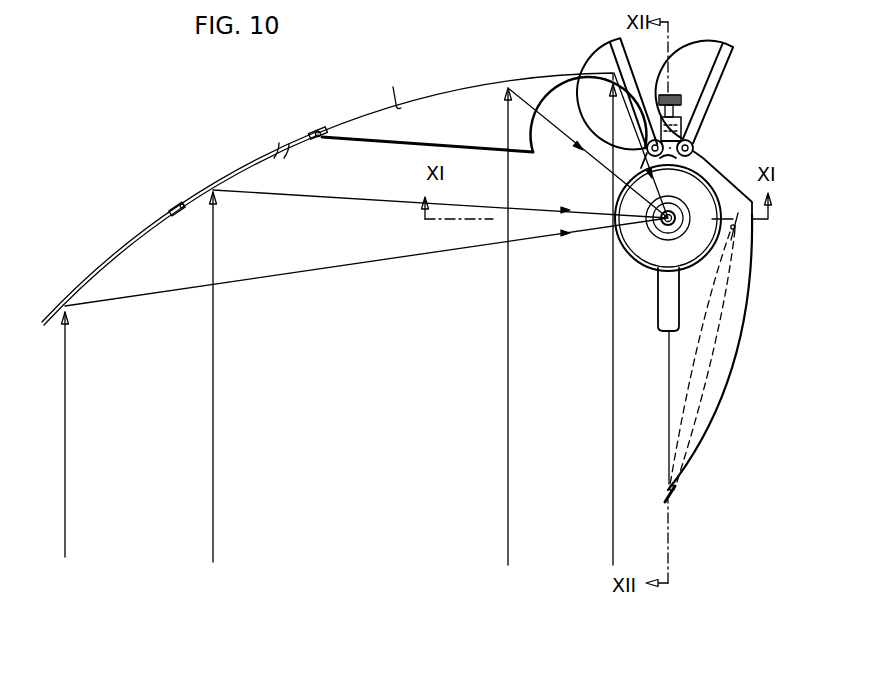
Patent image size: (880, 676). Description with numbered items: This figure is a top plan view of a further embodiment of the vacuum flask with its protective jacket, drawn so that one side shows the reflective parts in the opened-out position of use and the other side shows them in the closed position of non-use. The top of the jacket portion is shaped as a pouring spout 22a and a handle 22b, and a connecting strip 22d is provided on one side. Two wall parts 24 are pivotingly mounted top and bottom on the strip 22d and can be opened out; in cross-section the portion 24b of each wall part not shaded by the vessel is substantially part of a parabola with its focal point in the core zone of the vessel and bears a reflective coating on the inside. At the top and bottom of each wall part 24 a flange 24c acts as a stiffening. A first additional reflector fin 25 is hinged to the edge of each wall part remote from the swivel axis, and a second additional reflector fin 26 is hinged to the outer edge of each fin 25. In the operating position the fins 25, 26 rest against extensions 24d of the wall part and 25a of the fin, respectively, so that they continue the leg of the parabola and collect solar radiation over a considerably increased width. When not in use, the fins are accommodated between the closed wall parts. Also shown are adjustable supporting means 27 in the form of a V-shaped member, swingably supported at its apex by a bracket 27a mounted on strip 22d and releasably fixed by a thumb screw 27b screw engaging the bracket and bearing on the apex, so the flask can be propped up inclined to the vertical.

The pouring spout 22a is at (702, 182).
The handle 22b is at (663, 318).
The connecting strip 22d is at (687, 133).
The wall part 24 is at (463, 87).
The reflective portion of wall part 24b is at (390, 85).
The flange 24c is at (555, 90).
The extension of wall part 24d is at (318, 130).
The first additional reflector fin 25 is at (238, 165).
The extension of fin 25a is at (172, 202).
The second additional reflector fin 26 is at (97, 265).
The supporting means 27 is at (716, 60).
The bracket 27a is at (623, 36).
The thumb screw 27b is at (679, 100).